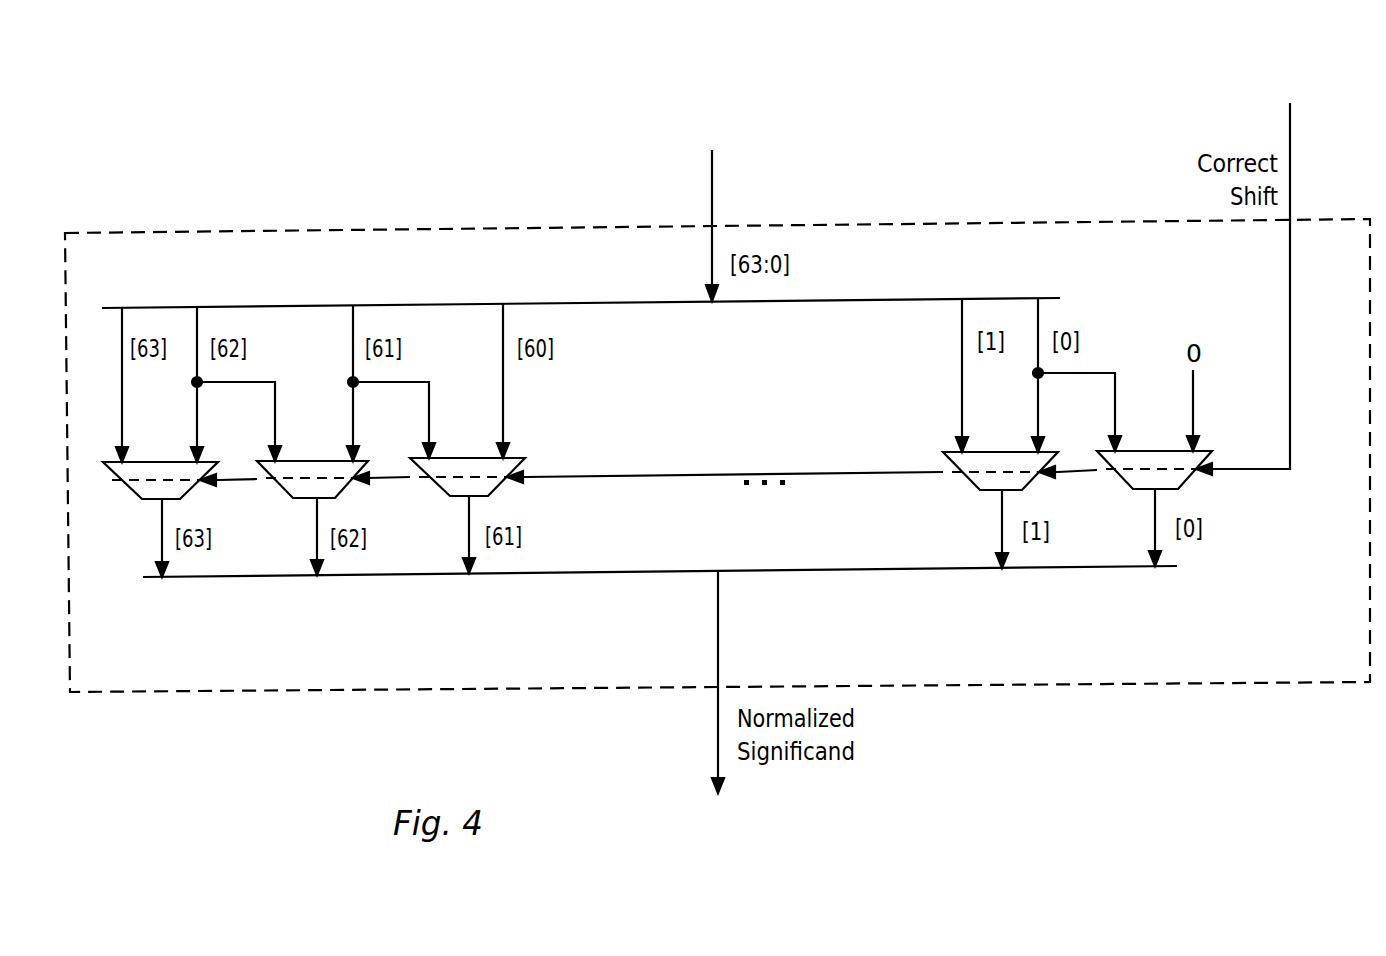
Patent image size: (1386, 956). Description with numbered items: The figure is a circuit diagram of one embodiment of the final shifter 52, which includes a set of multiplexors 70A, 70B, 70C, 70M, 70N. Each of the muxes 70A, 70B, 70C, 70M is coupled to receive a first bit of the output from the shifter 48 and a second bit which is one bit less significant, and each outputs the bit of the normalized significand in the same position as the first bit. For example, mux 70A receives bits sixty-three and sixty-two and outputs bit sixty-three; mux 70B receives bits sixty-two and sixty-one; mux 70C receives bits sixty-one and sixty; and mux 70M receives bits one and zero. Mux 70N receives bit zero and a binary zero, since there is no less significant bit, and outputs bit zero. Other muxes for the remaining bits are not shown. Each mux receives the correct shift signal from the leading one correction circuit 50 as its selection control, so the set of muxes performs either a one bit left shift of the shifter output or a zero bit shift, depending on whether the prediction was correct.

The multiplexor 70A is at (130, 488).
The multiplexor 70B is at (282, 487).
The multiplexor 70C is at (499, 486).
The multiplexor 70M is at (960, 474).
The multiplexor 70N is at (1208, 448).
The final shifter 52 is at (717, 455).
The shifter 48 is at (710, 208).
The leading one correction circuit 50 is at (1236, 250).